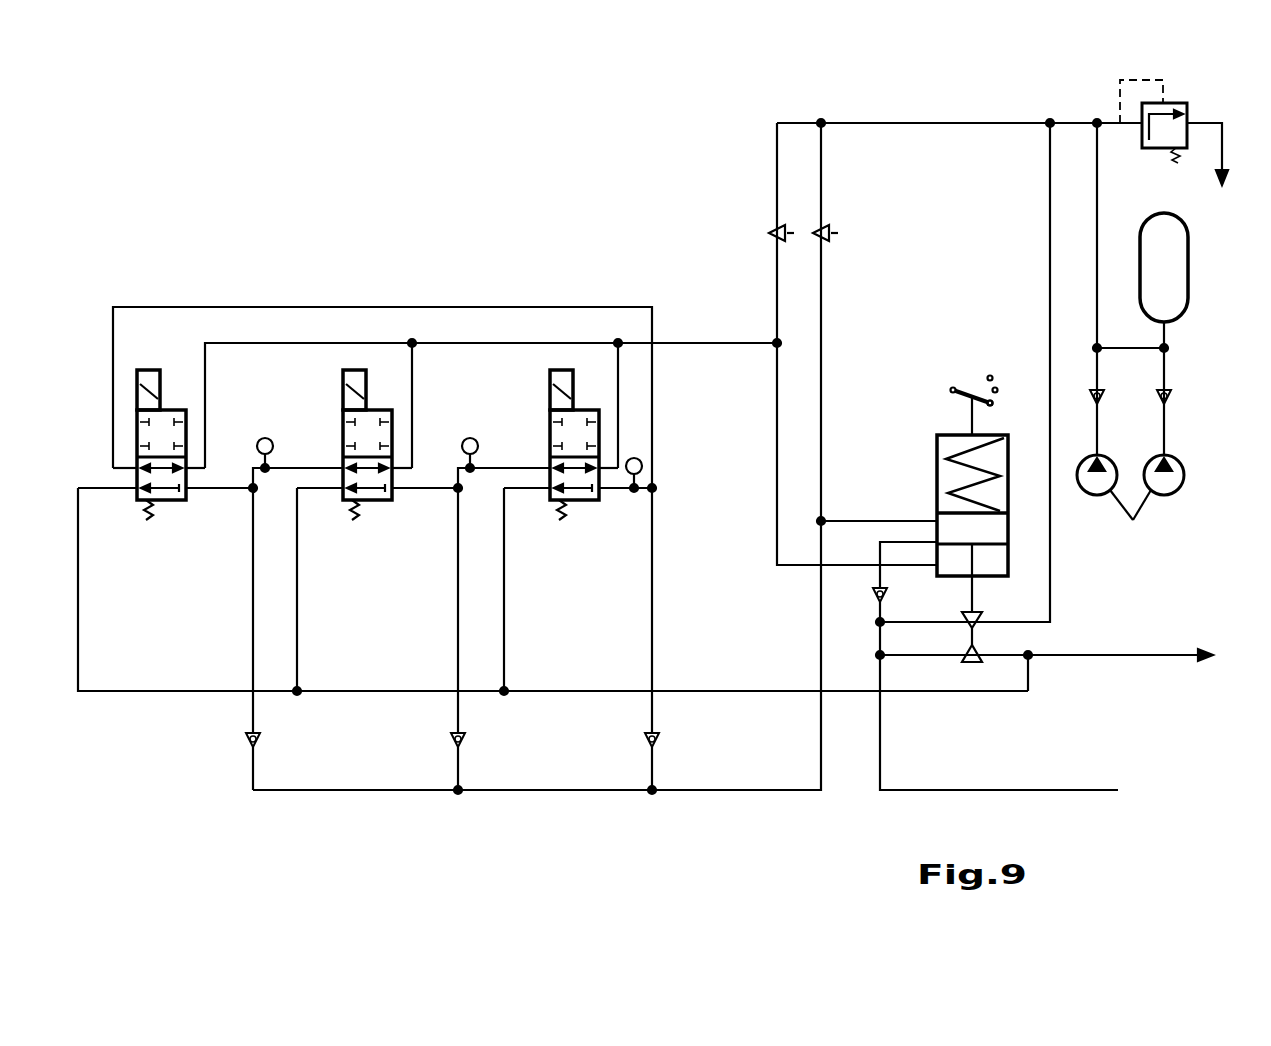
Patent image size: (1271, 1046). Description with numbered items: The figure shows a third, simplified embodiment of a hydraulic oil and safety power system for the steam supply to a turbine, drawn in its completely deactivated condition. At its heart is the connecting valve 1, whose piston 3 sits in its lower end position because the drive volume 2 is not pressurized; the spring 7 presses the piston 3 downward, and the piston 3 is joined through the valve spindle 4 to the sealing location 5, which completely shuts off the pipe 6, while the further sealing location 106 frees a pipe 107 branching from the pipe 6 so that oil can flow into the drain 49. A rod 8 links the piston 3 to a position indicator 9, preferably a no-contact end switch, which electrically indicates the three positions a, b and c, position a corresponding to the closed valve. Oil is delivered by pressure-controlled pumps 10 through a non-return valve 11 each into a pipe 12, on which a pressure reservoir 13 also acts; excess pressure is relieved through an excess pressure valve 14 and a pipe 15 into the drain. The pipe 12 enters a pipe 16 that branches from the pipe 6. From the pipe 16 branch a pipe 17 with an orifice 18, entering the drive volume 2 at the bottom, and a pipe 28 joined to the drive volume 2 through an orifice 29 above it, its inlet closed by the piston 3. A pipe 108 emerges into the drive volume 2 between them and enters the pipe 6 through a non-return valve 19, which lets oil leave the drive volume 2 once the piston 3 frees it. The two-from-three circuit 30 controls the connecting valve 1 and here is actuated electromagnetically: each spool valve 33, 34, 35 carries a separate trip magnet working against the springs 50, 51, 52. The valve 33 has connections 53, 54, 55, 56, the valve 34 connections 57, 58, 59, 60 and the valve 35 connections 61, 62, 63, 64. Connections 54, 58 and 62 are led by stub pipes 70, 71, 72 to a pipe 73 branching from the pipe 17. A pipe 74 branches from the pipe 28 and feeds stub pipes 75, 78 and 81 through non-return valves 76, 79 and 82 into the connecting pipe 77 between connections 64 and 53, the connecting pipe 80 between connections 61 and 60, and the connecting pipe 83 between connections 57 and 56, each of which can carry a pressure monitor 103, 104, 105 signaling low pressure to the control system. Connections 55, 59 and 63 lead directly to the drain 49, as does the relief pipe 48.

The connecting valve 1 is at (948, 613).
The drive volume 2 is at (998, 561).
The piston 3 is at (998, 532).
The valve spindle 4 is at (974, 592).
The sealing location 5 is at (984, 618).
The pipe 6 is at (1049, 165).
The spring 7 is at (993, 465).
The rod 8 is at (968, 418).
The position indicator 9 is at (975, 398).
The pressure-controlled pumps 10 is at (1130, 505).
The non-return valve 11 is at (1110, 406).
The pipe 12 is at (1098, 290).
The pressure reservoir 13 is at (1174, 273).
The excess pressure valve 14 is at (1179, 125).
The pipe 15 is at (1212, 122).
The pipe 16 is at (914, 121).
The pipe 17 is at (779, 150).
The orifice 18 is at (776, 231).
The non-return valve 19 is at (873, 601).
The pipe 28 is at (824, 150).
The orifice 29 is at (829, 230).
The first three-channel hydraulic two-from-three circuit 30 is at (514, 403).
The valve 33 is at (162, 410).
The valve 34 is at (368, 410).
The valve 35 is at (575, 410).
The pipe 48 is at (999, 690).
The drain 49 is at (1175, 657).
The spring 50 is at (153, 527).
The spring 51 is at (354, 530).
The spring 52 is at (560, 530).
The connection 53 is at (130, 470).
The connection 54 is at (196, 471).
The connection 55 is at (139, 490).
The connection 56 is at (189, 490).
The connection 57 is at (340, 469).
The connection 58 is at (399, 468).
The connection 59 is at (345, 490).
The connection 60 is at (392, 490).
The connection 61 is at (550, 468).
The connection 62 is at (601, 466).
The connection 63 is at (550, 490).
The connection 64 is at (600, 491).
The stub pipe 70 is at (206, 392).
The stub pipe 71 is at (414, 392).
The stub pipe 72 is at (620, 392).
The pipe 73 is at (714, 342).
The pipe 74 is at (762, 792).
The stub pipe 75 is at (654, 706).
The non-return valve 76 is at (647, 748).
The connecting pipe 77 is at (655, 402).
The stub pipe 78 is at (460, 706).
The non-return valve 79 is at (454, 748).
The connecting pipe 80 is at (493, 470).
The stub pipe 81 is at (255, 706).
The non-return valve 82 is at (248, 748).
The connecting pipe 83 is at (281, 472).
The pressure monitor 103 is at (643, 467).
The pressure monitor 104 is at (265, 438).
The pressure monitor 105 is at (476, 440).
The sealing location 106 is at (983, 652).
The pipe 107 is at (894, 658).
The pipe 108 is at (880, 543).
The position a is at (993, 404).
The position b is at (999, 390).
The position c is at (994, 376).